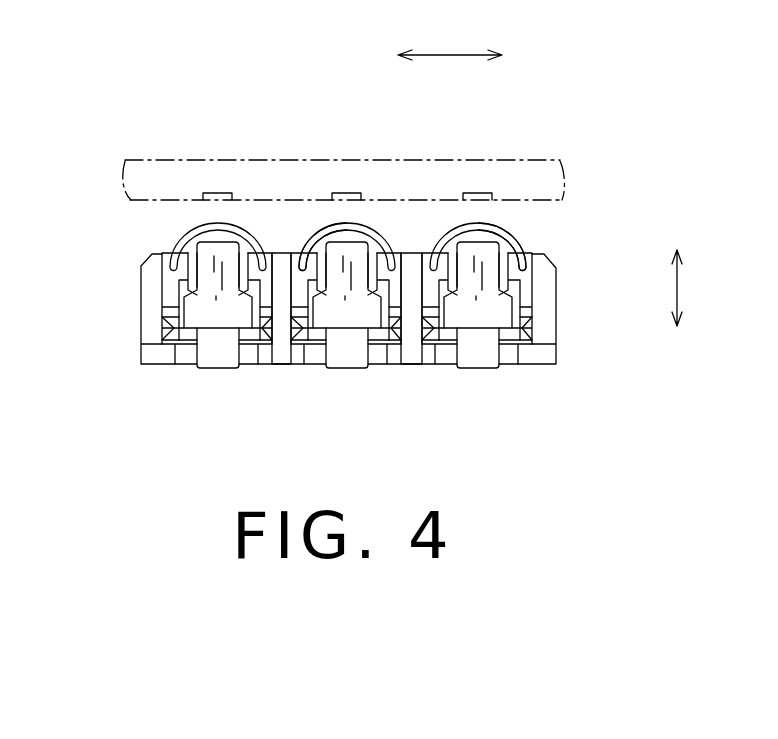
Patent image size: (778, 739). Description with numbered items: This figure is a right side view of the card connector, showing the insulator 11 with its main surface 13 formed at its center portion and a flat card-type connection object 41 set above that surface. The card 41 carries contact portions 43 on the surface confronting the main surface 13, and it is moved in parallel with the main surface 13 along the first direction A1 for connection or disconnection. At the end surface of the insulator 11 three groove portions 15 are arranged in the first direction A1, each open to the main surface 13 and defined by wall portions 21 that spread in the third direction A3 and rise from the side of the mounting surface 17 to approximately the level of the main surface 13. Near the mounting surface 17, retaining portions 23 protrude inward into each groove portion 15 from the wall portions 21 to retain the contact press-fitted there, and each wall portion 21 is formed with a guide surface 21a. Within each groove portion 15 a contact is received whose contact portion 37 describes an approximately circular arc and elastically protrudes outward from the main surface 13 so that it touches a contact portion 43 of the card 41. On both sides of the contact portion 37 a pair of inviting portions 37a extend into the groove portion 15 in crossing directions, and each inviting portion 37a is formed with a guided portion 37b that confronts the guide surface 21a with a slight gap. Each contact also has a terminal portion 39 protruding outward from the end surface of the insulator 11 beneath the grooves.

The insulator 11 is at (560, 301).
The main surface 13 is at (410, 253).
The groove portion 15 is at (170, 287).
The mounting surface 17 is at (383, 367).
The wall portion 21 is at (141, 303).
The guide surface 21a is at (163, 270).
The retaining portion 23 is at (168, 324).
The contact portion 37 is at (486, 228).
The inviting portion 37a is at (516, 248).
The guided portion 37b is at (299, 263).
The terminal portion 39 is at (210, 369).
The connection object 41 is at (294, 157).
The contact portion 43 is at (216, 186).
The first direction A1 is at (466, 55).
The third direction A3 is at (676, 288).